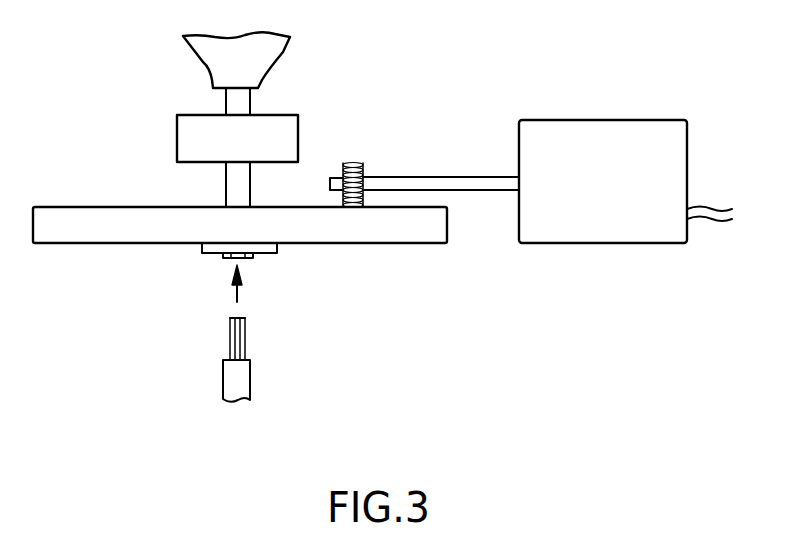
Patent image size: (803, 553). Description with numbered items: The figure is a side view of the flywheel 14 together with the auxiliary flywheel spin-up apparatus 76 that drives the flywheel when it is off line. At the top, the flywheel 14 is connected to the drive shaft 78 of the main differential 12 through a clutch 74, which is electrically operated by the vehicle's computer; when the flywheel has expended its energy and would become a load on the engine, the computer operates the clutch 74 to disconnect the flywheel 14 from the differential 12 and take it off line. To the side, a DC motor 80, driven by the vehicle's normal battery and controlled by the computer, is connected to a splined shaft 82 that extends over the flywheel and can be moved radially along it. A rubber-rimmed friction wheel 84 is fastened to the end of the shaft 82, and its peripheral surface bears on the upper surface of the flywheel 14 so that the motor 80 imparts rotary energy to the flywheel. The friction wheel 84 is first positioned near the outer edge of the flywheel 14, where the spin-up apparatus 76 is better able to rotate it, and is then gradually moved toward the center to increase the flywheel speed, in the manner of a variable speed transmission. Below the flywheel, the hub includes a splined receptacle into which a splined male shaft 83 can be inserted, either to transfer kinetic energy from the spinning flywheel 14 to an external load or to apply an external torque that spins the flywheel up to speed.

The main differential 12 is at (291, 50).
The drive shaft 78 is at (252, 100).
The clutch 74 is at (298, 132).
The flywheel 14 is at (127, 245).
The splined male shaft 83 is at (247, 342).
The rubber-rimmed friction wheel 84 is at (350, 162).
The splined shaft 82 is at (485, 193).
The DC motor 80 is at (688, 162).
The auxiliary flywheel spin-up apparatus 76 is at (473, 113).